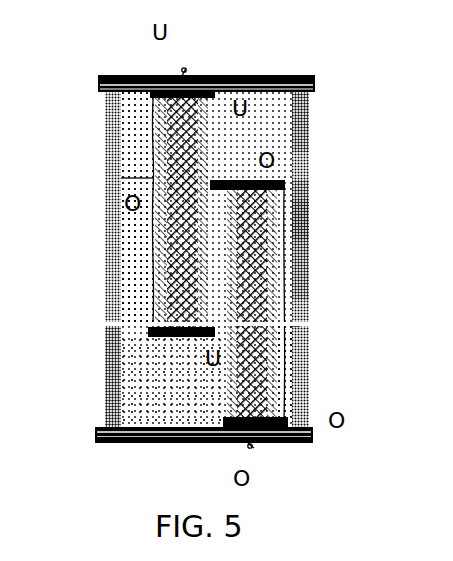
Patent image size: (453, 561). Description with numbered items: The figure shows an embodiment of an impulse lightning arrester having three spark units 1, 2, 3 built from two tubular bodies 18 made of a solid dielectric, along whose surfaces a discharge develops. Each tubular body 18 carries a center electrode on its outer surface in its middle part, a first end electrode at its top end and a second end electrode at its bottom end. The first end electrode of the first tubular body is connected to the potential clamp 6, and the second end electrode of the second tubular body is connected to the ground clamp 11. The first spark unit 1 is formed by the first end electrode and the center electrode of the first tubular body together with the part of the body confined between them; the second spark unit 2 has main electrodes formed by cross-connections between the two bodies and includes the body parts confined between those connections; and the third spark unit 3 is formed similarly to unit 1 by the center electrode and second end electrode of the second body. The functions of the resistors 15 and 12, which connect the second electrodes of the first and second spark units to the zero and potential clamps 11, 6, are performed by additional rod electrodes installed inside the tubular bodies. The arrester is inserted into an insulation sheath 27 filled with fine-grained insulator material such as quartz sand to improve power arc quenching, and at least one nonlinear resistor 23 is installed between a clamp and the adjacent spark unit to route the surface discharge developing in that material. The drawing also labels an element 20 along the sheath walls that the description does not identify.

The first spark unit 1 is at (128, 142).
The second spark unit 2 is at (128, 248).
The third spark unit 3 is at (300, 392).
The potential clamp 6 is at (186, 68).
The ground clamp 11 is at (254, 448).
The resistor 12 is at (309, 308).
The resistor 15 is at (278, 214).
The tubular body 18 is at (309, 150).
The housing wall 20 is at (121, 118).
The nonlinear resistor 23 is at (213, 76).
The insulation sheath 27 is at (309, 244).